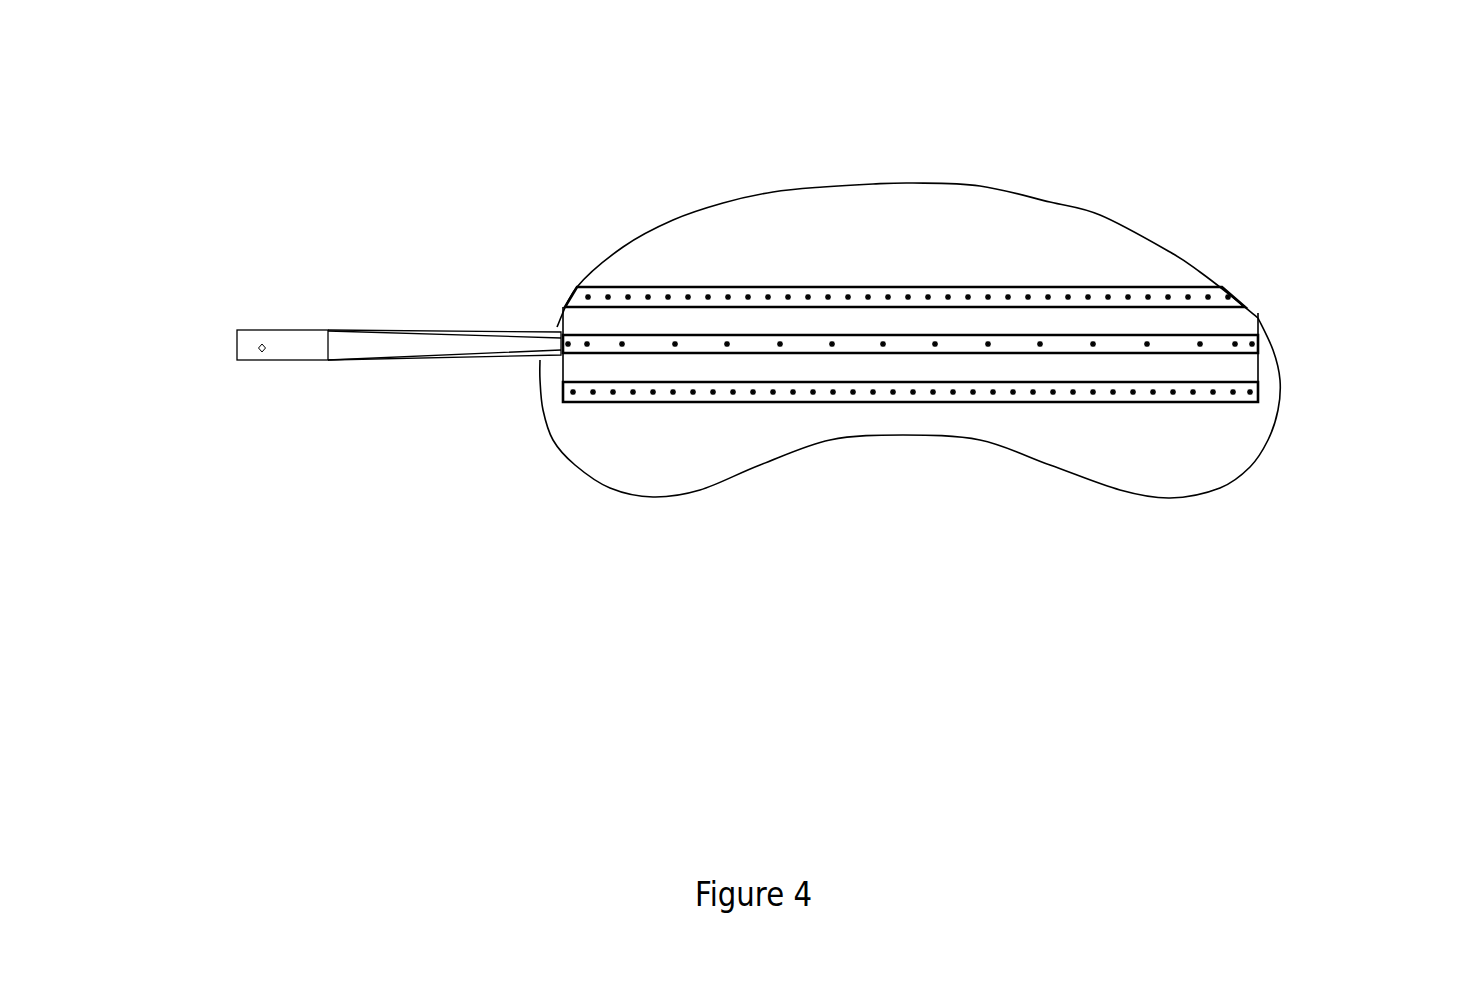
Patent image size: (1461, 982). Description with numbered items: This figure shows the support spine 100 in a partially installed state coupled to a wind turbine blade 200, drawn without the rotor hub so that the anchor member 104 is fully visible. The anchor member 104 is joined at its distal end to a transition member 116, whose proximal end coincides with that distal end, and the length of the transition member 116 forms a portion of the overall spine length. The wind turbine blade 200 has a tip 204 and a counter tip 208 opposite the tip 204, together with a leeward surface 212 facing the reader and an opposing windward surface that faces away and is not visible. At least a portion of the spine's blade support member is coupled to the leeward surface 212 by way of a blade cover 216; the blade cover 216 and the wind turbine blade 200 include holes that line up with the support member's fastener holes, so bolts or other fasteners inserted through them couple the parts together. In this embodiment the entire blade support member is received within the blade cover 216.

The support spine 100 is at (310, 257).
The anchor member 104 is at (274, 330).
The transition member 116 is at (453, 328).
The wind turbine blade 200 is at (903, 266).
The tip 204 is at (1283, 383).
The counter tip 208 is at (538, 397).
The leeward surface 212 is at (992, 233).
The blade cover 216 is at (897, 298).